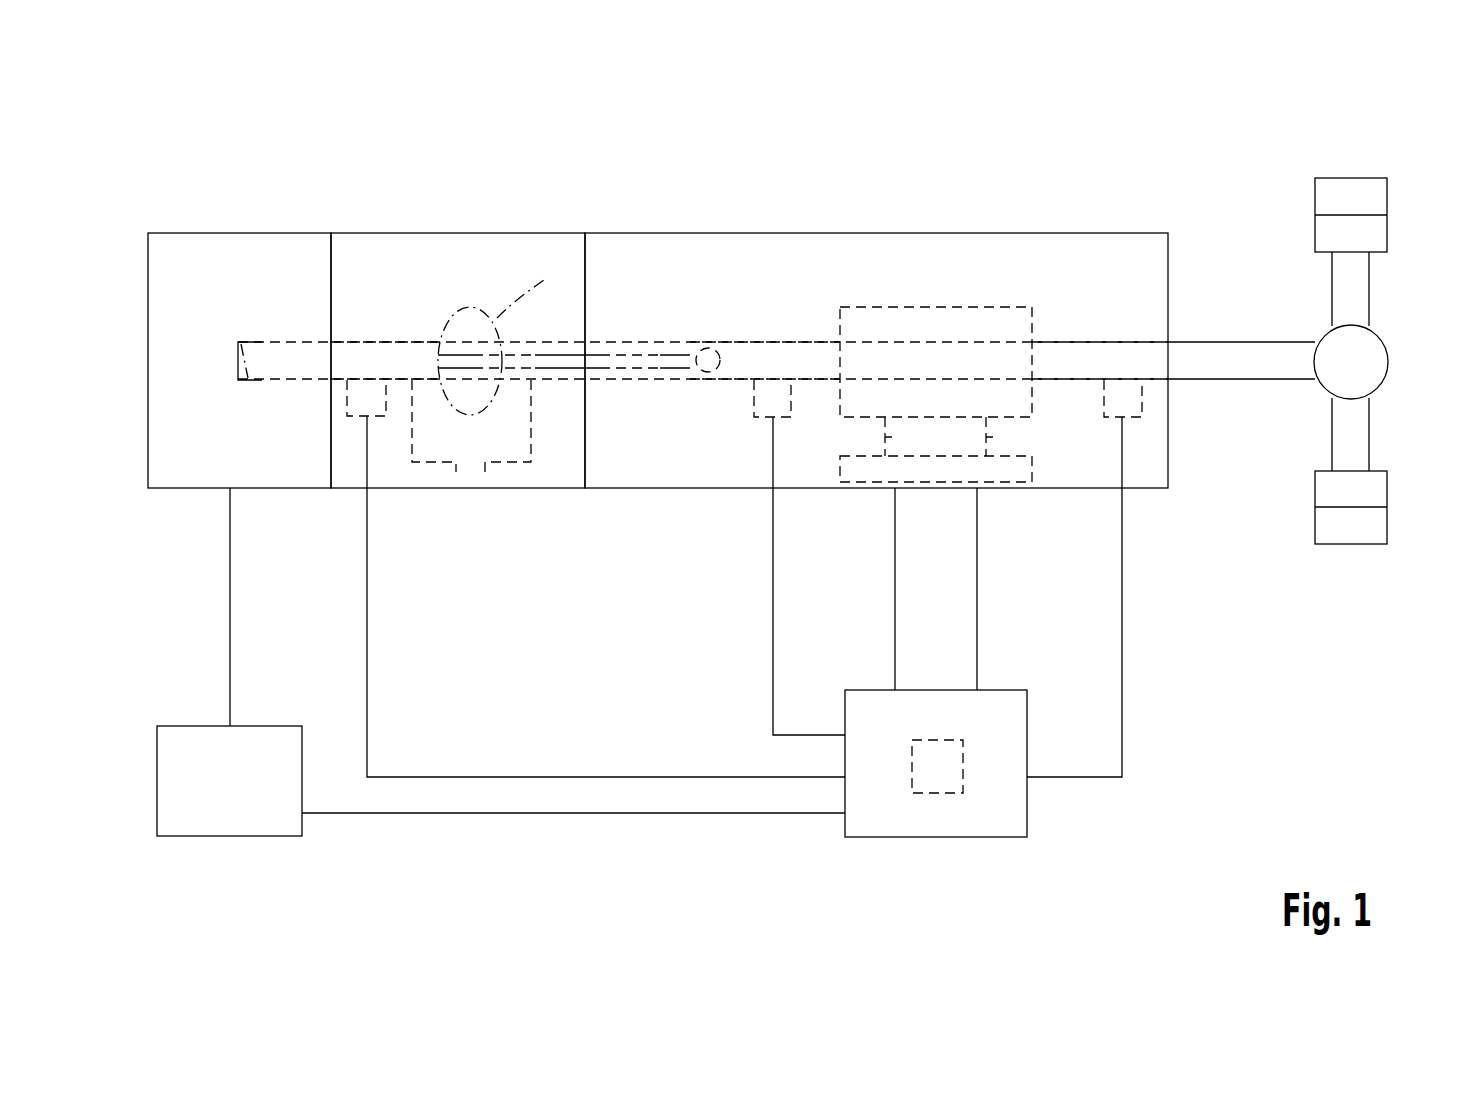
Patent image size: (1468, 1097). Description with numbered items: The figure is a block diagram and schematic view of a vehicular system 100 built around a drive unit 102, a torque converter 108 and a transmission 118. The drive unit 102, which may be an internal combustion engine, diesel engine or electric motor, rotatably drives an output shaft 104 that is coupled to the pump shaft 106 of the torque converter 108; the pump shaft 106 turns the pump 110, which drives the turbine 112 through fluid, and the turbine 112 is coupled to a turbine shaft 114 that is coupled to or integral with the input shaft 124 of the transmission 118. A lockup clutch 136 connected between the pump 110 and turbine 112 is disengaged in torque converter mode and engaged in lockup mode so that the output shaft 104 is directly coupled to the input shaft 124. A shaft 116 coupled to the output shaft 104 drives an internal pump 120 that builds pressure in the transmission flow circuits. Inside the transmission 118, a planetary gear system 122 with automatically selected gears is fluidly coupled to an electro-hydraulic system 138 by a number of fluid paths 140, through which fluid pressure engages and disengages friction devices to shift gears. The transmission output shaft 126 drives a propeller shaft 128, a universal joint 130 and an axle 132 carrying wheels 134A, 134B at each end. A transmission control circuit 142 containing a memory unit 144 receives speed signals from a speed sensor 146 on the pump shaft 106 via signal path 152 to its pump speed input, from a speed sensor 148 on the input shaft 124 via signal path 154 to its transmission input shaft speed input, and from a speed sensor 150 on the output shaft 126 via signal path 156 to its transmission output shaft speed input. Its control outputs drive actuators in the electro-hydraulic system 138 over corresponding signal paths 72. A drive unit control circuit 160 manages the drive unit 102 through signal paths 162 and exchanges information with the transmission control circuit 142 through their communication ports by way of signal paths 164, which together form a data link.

The vehicular system 100 is at (186, 154).
The drive unit 102 is at (268, 233).
The output shaft 104 is at (280, 342).
The pump shaft 106 is at (385, 342).
The torque converter 108 is at (466, 233).
The pump 110 is at (445, 317).
The turbine 112 is at (544, 280).
The turbine shaft 114 is at (548, 340).
The shaft 116 is at (608, 372).
The transmission 118 is at (875, 233).
The internal pump 120 is at (708, 348).
The planetary gear system 122 is at (962, 380).
The input shaft 124 is at (787, 342).
The output shaft 126 is at (1098, 343).
The propeller shaft 128 is at (1240, 343).
The universal joint 130 is at (1385, 380).
The axle 132 is at (1369, 295).
The wheel 134A is at (1352, 177).
The wheel 134B is at (1350, 546).
The lockup clutch 136 is at (485, 467).
The electro-hydraulic system 138 is at (1005, 482).
The fluid paths 140 is at (1148, 519).
The transmission control circuit 142 is at (908, 837).
The memory unit 144 is at (948, 793).
The speed sensor 146 is at (345, 398).
The speed sensor 148 is at (765, 398).
The speed sensor 150 is at (1142, 398).
The signal path 152 is at (530, 777).
The signal path 154 is at (773, 618).
The signal path 156 is at (1122, 655).
The drive unit control circuit 160 is at (220, 838).
The signal paths 162 is at (230, 542).
The signal paths 164 is at (484, 815).
The signal paths 72 is at (895, 548).